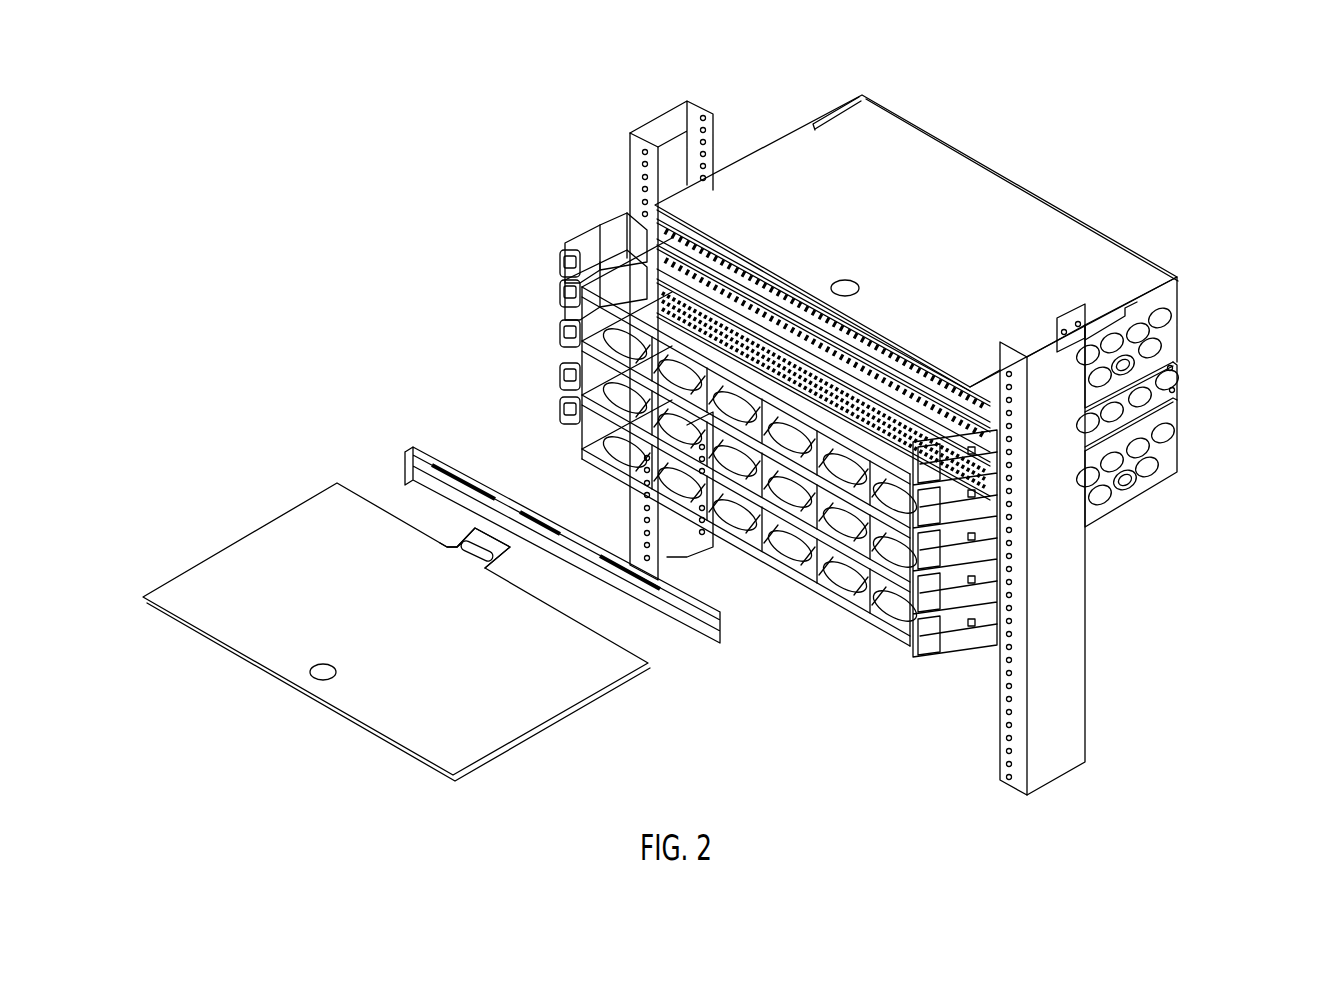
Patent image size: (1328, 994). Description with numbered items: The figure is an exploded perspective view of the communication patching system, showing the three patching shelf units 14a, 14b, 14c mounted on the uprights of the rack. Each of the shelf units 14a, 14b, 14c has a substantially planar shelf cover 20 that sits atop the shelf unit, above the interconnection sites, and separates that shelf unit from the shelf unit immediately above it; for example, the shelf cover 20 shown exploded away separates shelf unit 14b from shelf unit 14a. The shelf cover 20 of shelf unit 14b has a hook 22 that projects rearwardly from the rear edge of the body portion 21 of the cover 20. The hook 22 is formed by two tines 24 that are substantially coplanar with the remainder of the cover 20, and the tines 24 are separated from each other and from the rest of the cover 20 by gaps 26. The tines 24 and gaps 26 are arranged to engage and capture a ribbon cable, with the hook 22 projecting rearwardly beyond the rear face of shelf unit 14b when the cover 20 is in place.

The shelf cover 20 is at (1092, 255).
The body portion 21 is at (462, 743).
The hook 22 is at (457, 540).
The tines 24 is at (510, 558).
The gaps 26 is at (465, 540).
The patching shelf unit 14a is at (1182, 319).
The patching shelf unit 14b is at (1182, 377).
The patching shelf unit 14c is at (1182, 452).